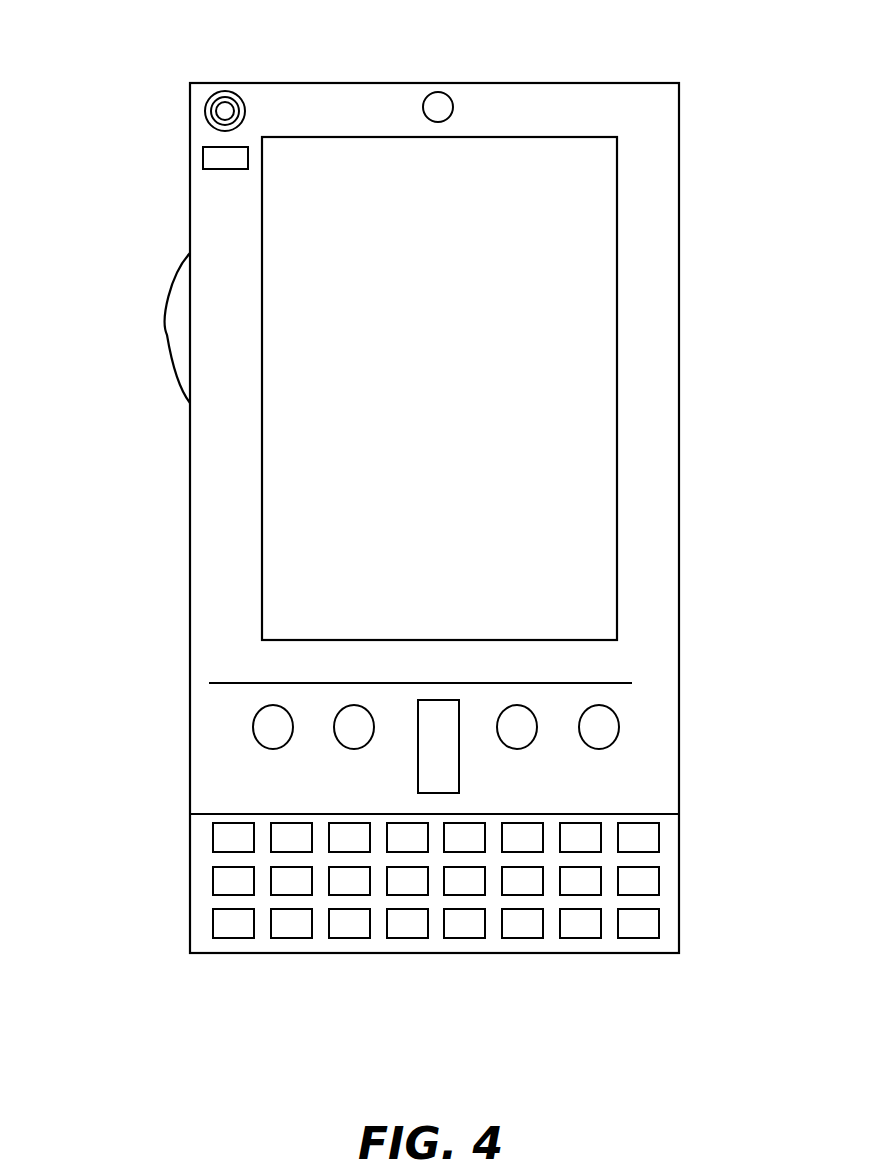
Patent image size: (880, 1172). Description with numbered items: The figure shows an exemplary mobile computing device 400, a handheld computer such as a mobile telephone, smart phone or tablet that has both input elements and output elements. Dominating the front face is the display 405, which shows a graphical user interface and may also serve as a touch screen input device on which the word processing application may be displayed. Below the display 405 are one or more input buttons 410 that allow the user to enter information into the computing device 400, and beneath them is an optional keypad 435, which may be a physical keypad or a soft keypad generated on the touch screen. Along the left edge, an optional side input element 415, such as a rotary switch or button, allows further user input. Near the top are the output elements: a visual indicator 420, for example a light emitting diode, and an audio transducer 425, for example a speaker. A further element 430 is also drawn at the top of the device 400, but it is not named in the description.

The mobile computing device 400 is at (667, 101).
The display 405 is at (370, 554).
The input buttons 410 is at (437, 753).
The side input element 415 is at (180, 328).
The visual indicator 420 is at (204, 162).
The audio transducer 425 is at (205, 112).
The speaker 430 is at (453, 105).
The keypad 435 is at (198, 928).